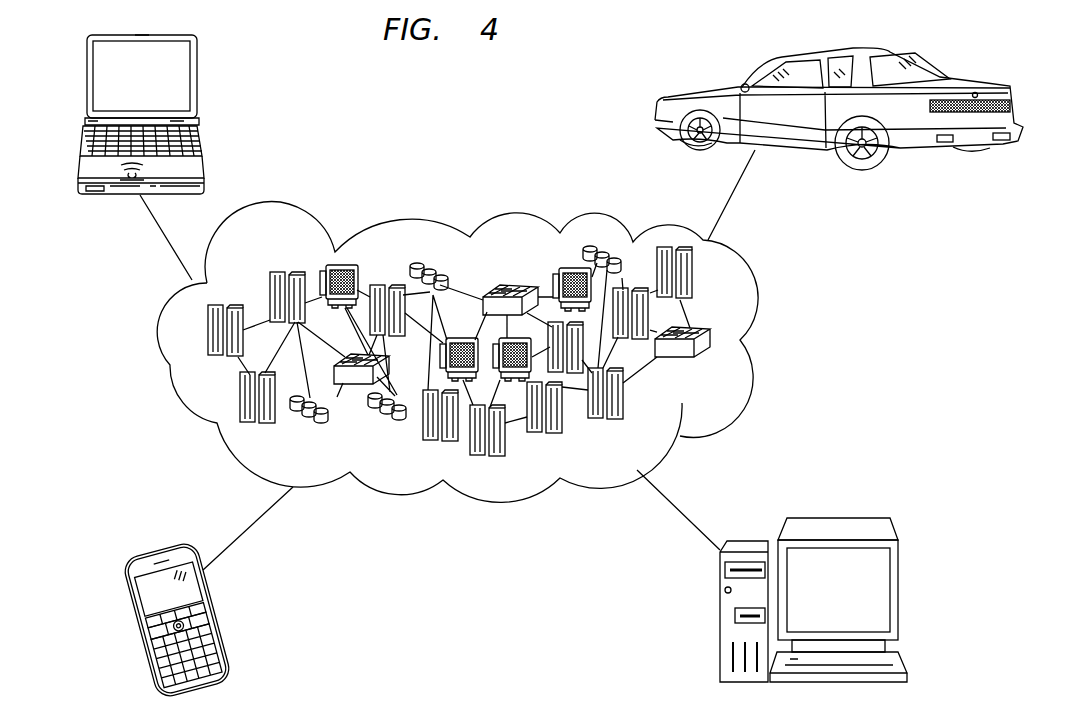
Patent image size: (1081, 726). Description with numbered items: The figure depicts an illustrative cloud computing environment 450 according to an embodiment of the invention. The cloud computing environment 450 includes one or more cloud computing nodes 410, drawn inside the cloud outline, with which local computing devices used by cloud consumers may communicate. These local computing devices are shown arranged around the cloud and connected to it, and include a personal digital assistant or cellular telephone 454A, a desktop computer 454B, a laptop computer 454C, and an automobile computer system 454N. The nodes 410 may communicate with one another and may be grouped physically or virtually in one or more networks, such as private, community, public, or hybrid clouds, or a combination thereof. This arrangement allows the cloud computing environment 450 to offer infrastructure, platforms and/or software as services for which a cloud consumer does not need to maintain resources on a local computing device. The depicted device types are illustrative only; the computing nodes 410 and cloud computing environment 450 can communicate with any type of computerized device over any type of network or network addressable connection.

The cloud computing environment 450 is at (757, 291).
The cloud computing nodes 410 is at (713, 362).
The personal digital assistant (PDA) or cellular telephone 454A is at (128, 612).
The desktop computer 454B is at (838, 520).
The laptop computer 454C is at (88, 72).
The automobile computer system 454N is at (988, 83).